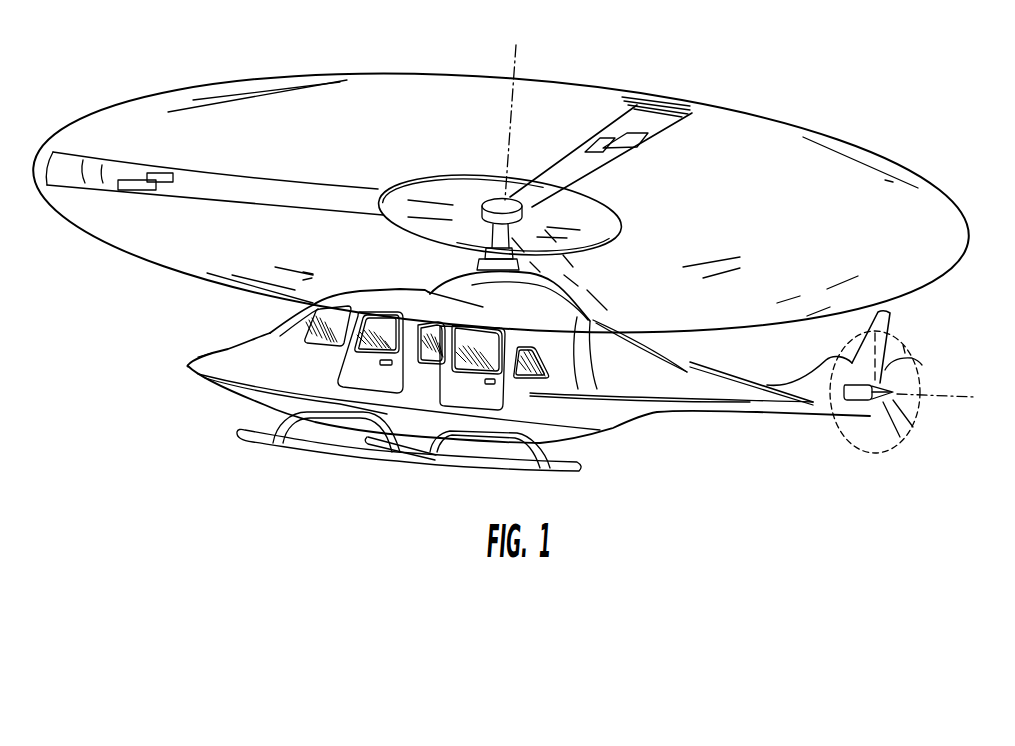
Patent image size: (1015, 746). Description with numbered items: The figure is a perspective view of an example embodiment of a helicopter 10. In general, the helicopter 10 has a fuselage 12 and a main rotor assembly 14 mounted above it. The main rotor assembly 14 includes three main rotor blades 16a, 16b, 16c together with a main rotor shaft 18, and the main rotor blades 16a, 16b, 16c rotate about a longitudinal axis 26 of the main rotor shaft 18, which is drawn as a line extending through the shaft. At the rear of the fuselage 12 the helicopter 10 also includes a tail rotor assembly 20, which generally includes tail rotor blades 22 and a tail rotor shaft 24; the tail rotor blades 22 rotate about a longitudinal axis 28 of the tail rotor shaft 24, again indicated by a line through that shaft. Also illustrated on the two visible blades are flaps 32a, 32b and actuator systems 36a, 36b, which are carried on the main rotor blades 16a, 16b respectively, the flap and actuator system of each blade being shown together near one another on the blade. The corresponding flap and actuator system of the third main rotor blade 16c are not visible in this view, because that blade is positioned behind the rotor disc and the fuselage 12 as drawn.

The helicopter 10 is at (699, 64).
The fuselage 12 is at (225, 388).
The main rotor assembly 14 is at (570, 258).
The main rotor blade 16a is at (200, 169).
The main rotor blade 16b is at (607, 163).
The main rotor blade 16c is at (614, 314).
The main rotor shaft 18 is at (490, 232).
The tail rotor assembly 20 is at (901, 462).
The tail rotor blades 22 is at (897, 368).
The tail rotor shaft 24 is at (845, 398).
The longitudinal axis 26 is at (508, 124).
The longitudinal axis 28 is at (953, 397).
The flap 32a is at (143, 190).
The flap 32b is at (628, 143).
The actuator system 36a is at (167, 183).
The actuator system 36b is at (603, 141).